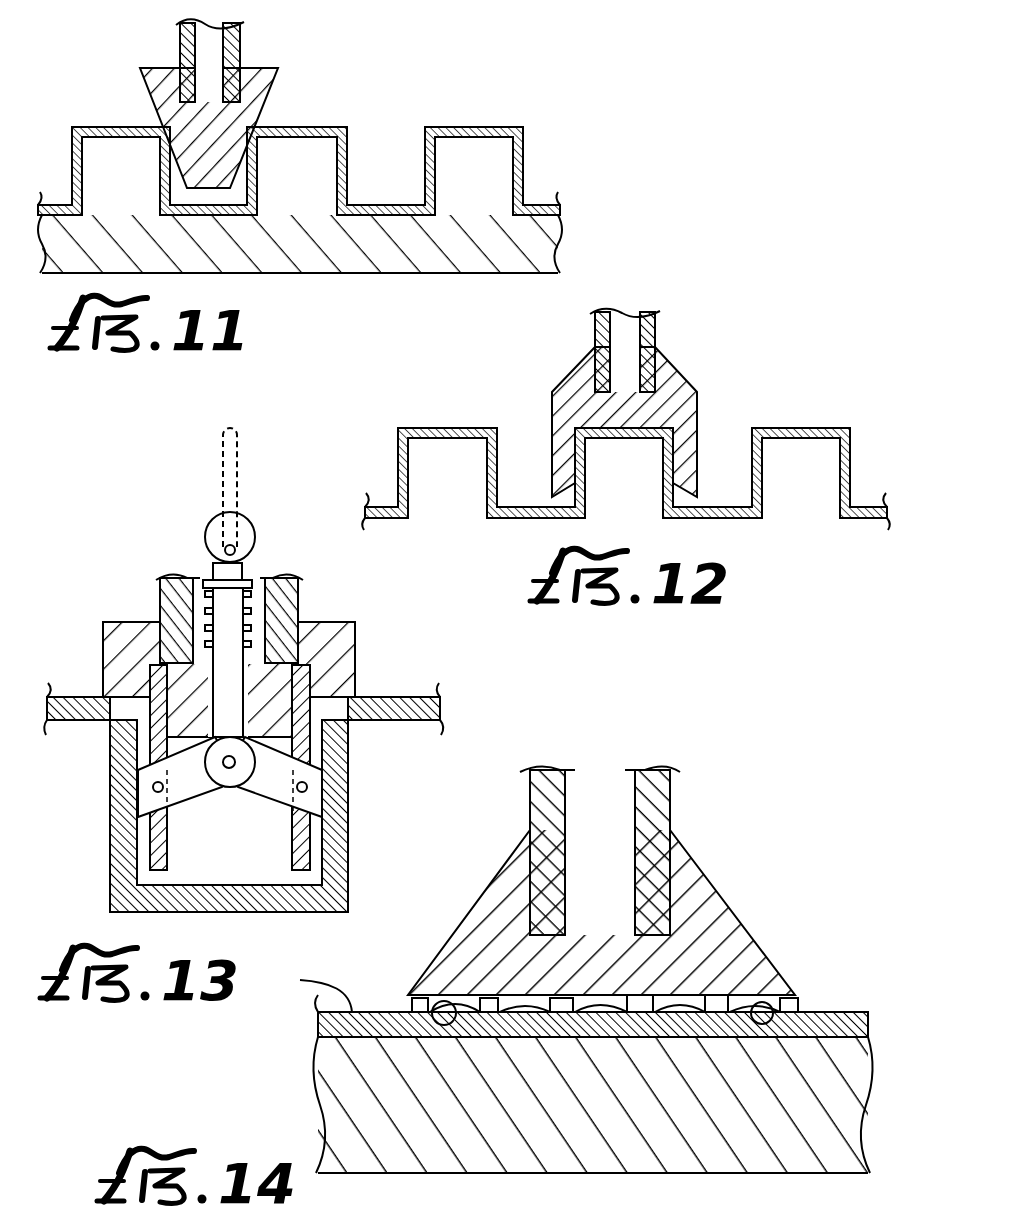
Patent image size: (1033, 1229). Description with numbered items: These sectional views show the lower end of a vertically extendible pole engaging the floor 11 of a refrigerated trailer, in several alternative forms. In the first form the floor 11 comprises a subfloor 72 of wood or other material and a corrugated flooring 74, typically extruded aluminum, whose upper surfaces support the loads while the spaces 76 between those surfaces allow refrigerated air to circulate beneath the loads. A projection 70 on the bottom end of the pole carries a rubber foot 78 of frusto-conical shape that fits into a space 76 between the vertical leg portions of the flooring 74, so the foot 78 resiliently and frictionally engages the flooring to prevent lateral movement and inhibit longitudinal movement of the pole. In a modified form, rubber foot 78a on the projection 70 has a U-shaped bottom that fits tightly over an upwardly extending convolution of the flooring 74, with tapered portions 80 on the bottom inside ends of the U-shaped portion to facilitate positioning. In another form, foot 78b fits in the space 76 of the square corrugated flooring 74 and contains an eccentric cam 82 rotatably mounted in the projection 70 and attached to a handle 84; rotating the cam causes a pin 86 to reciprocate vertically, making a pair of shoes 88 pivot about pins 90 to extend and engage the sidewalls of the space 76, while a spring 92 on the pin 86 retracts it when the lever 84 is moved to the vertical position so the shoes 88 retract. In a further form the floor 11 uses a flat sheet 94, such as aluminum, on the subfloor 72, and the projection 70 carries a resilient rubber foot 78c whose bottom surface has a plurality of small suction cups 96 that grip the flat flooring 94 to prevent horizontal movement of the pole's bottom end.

In FIG. 11, the floor 11 is at (536, 147).
In FIG. 11, the projection 70 is at (241, 52).
In FIG. 12, the projection 70 is at (657, 330).
In FIG. 13, the projection 70 is at (300, 600).
In FIG. 14, the projection 70 is at (672, 790).
In FIG. 11, the subfloor 72 is at (540, 238).
In FIG. 14, the subfloor 72 is at (325, 1088).
In FIG. 11, the corrugated flooring 74 is at (477, 127).
In FIG. 12, the corrugated flooring 74 is at (797, 428).
In FIG. 13, the corrugated flooring 74 is at (380, 697).
In FIG. 14, the corrugated flooring 74 is at (593, 1024).
In FIG. 11, the space 76 is at (402, 172).
In FIG. 13, the space 76 is at (236, 882).
In FIG. 11, the rubber foot 78 is at (278, 87).
In FIG. 12, the rubber foot 78a is at (690, 386).
In FIG. 13, the foot 78b is at (357, 650).
In FIG. 14, the foot 78c is at (705, 868).
In FIG. 12, the tapered portions 80 is at (690, 483).
In FIG. 13, the eccentric cam 82 is at (212, 522).
In FIG. 13, the handle 84 is at (222, 460).
In FIG. 13, the pin 86 is at (212, 572).
In FIG. 13, the shoes 88 is at (275, 802).
In FIG. 13, the pins 90 is at (153, 787).
In FIG. 13, the spring 92 is at (207, 613).
In FIG. 14, the flat sheet 94 is at (320, 1000).
In FIG. 14, the suction cups 96 is at (425, 1015).